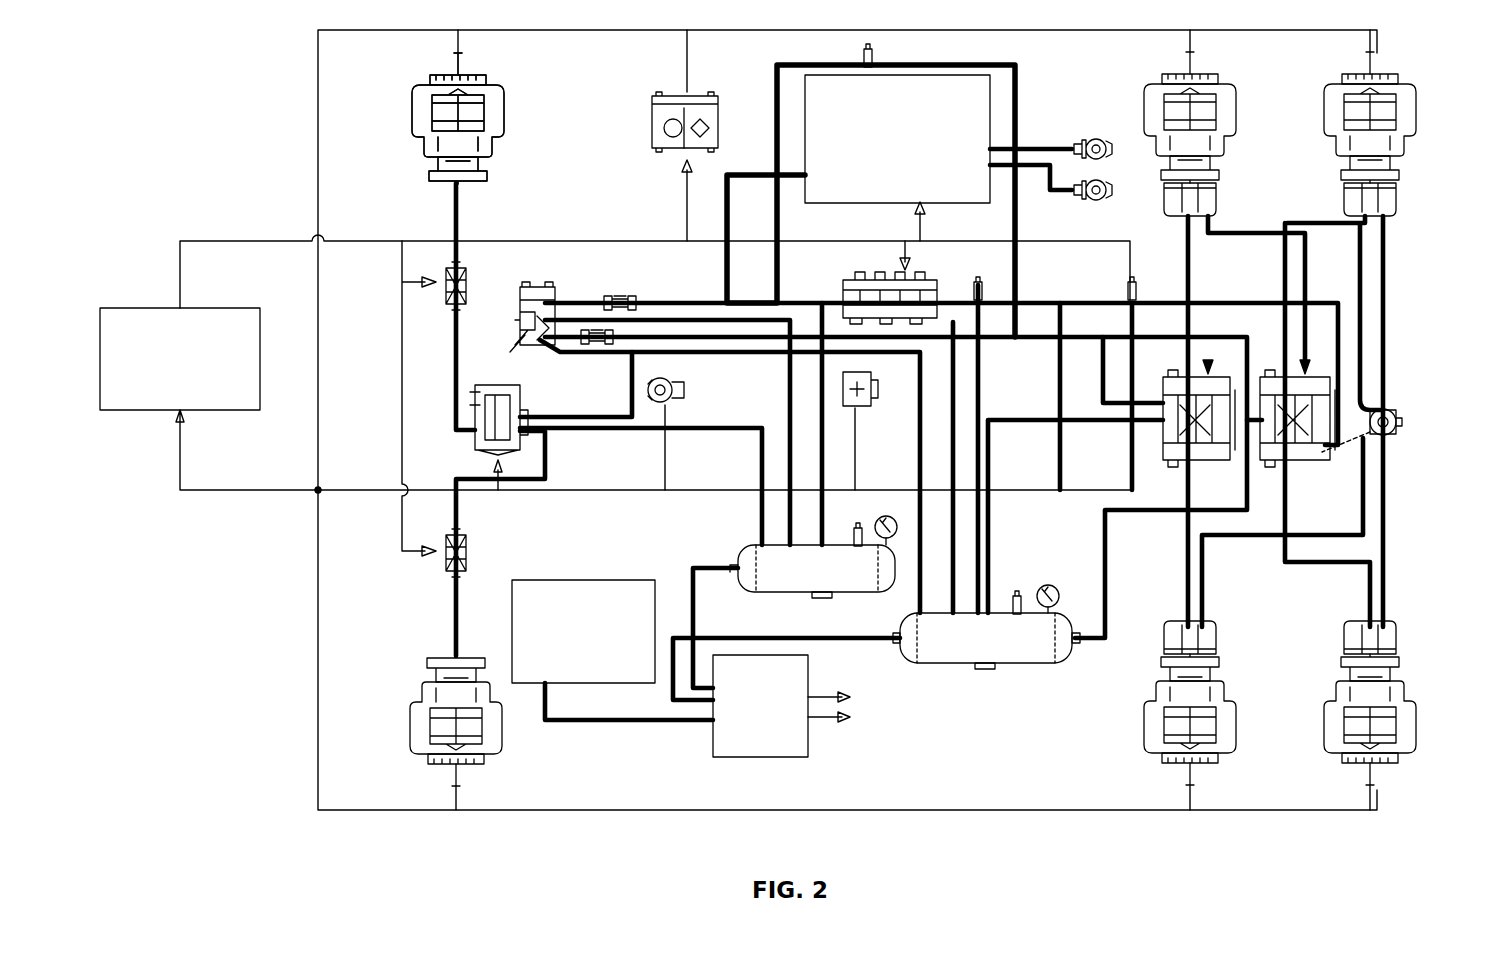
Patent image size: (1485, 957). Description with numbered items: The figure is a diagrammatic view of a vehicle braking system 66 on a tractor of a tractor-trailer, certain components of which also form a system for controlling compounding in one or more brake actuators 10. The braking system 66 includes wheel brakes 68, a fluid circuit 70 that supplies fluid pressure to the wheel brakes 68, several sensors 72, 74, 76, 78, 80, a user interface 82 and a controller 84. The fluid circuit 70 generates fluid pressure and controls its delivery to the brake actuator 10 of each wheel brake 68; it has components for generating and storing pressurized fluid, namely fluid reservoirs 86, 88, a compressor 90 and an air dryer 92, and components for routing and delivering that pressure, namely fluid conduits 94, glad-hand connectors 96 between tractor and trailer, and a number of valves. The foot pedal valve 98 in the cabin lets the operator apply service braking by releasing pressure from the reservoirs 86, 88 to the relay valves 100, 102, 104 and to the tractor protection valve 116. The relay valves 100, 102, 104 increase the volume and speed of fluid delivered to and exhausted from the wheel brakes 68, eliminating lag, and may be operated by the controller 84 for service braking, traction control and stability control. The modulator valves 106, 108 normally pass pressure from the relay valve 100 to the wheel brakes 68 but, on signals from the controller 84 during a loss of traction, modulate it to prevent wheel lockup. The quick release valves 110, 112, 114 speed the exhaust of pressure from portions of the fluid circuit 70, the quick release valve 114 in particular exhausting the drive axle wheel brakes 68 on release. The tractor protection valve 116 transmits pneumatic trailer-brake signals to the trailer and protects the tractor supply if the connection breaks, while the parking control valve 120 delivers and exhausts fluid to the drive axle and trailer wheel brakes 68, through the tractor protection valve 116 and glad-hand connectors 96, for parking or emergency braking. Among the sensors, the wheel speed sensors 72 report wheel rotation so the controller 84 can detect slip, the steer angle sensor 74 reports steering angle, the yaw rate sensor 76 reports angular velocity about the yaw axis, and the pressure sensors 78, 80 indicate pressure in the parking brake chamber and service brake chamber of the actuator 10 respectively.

The brake actuator 10 is at (1208, 200).
The braking system 66 is at (262, 98).
The wheel brakes 68 is at (430, 118).
The fluid circuit 70 is at (620, 738).
The wheel speed sensors 72 is at (478, 82).
The steer angle sensor 74 is at (684, 392).
The yaw rate sensor 76 is at (866, 400).
The pressure sensor 78 is at (982, 283).
The pressure sensor 80 is at (1132, 296).
The user interface 82 is at (650, 128).
The controller 84 is at (135, 325).
The fluid reservoir 86 is at (742, 560).
The fluid reservoir 88 is at (948, 650).
The compressor 90 is at (606, 598).
The air dryer 92 is at (800, 740).
The fluid conduits 94 is at (990, 542).
The glad-hand connectors 96 is at (1092, 148).
The foot pedal valve 98 is at (535, 286).
The relay valve 100 is at (475, 400).
The relay valve 102 is at (1208, 465).
The relay valve 104 is at (1302, 460).
The modulator valve 106 is at (446, 300).
The modulator valve 108 is at (468, 553).
The quick release valve 110 is at (622, 298).
The quick release valve 112 is at (600, 345).
The quick release valve 114 is at (1398, 425).
The tractor protection valve 116 is at (975, 122).
The parking control valve 120 is at (860, 278).